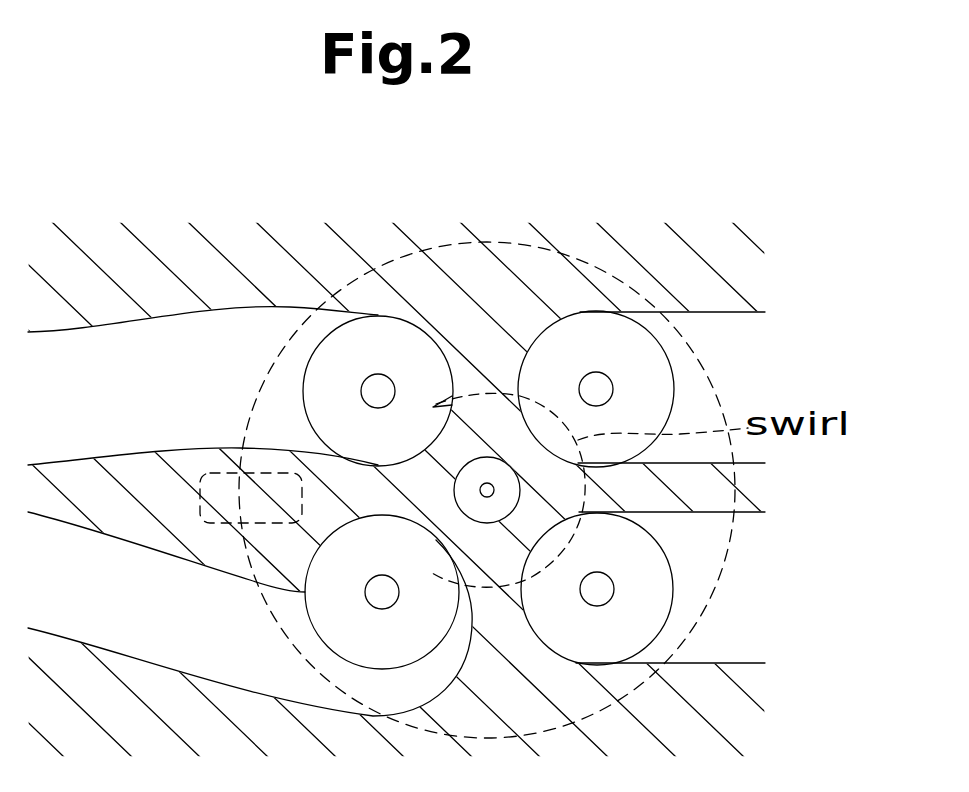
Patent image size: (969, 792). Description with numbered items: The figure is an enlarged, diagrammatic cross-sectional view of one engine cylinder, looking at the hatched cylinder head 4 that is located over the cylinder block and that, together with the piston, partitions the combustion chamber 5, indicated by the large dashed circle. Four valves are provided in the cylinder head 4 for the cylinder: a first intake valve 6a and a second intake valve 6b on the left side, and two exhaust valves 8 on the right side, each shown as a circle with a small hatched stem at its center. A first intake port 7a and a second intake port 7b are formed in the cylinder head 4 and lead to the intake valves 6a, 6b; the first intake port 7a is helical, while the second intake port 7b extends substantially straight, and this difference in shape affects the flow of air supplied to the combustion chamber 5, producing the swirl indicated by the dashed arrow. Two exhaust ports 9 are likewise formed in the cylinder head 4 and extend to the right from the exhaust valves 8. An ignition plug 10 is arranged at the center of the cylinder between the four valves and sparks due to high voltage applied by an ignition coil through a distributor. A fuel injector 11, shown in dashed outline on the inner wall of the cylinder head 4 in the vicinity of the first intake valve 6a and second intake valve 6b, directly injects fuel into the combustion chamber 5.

The cylinder head 4 is at (712, 246).
The combustion chamber 5 is at (483, 240).
The first intake valve 6a is at (396, 643).
The second intake valve 6b is at (401, 333).
The first intake port 7a is at (212, 665).
The second intake port 7b is at (182, 335).
The exhaust valve 8 is at (587, 331).
The exhaust port 9 is at (720, 318).
The ignition plug 10 is at (507, 462).
The fuel injector 11 is at (203, 473).